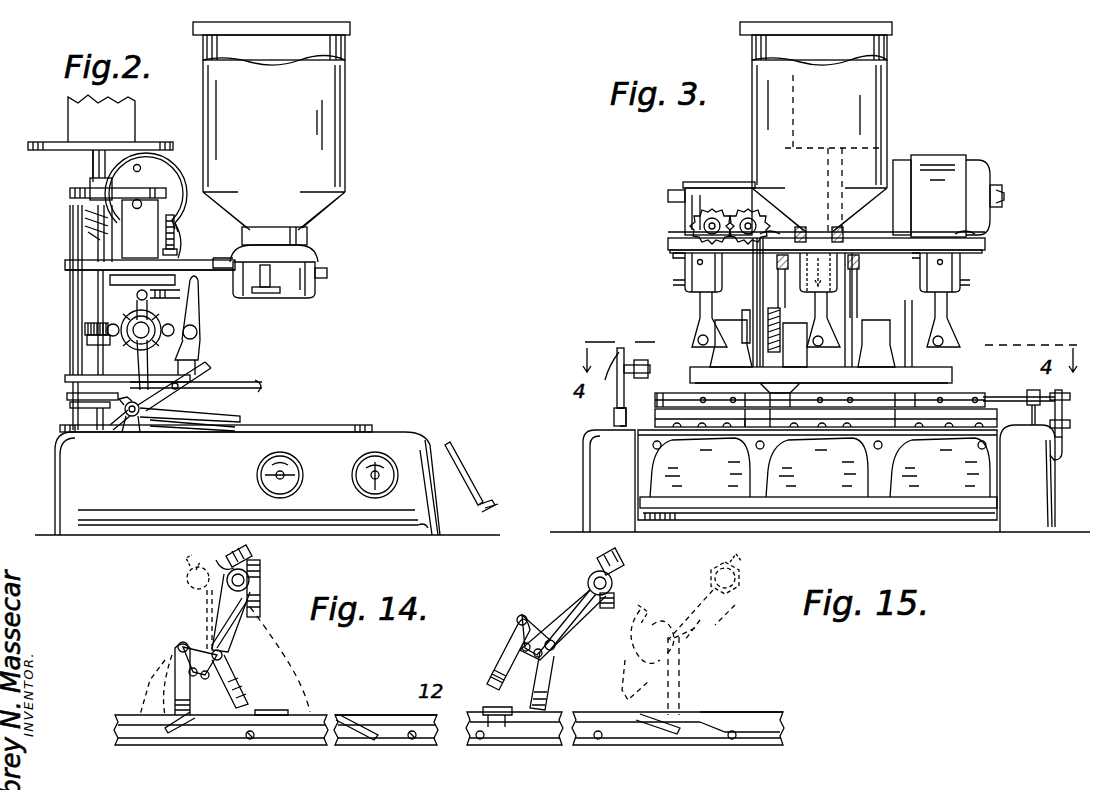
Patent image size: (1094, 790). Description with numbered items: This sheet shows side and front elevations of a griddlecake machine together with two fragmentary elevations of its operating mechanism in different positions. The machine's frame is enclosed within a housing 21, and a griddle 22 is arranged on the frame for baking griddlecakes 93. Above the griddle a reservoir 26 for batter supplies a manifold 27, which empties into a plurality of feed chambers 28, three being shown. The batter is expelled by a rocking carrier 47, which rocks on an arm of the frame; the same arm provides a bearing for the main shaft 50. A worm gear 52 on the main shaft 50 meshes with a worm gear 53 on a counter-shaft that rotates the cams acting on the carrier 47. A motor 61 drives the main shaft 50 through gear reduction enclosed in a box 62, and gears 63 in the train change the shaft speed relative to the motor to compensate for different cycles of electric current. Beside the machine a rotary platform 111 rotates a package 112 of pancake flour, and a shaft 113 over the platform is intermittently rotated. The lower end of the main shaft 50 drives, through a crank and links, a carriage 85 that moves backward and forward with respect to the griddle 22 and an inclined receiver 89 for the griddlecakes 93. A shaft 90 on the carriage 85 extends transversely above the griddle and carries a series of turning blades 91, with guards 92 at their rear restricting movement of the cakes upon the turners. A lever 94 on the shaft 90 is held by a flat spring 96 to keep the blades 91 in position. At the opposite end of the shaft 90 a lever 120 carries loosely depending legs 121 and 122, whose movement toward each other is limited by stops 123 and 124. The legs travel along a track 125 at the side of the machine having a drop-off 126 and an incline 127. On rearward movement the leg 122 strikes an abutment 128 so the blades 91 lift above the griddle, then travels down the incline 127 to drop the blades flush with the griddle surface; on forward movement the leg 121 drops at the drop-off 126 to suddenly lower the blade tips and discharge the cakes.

In FIG. 2, the housing 21 is at (64, 476).
In FIG. 3, the housing 21 is at (592, 475).
In FIG. 2, the griddle 22 is at (328, 426).
In FIG. 3, the griddle 22 is at (940, 418).
In FIG. 2, the reservoir 26 is at (330, 105).
In FIG. 3, the reservoir 26 is at (752, 124).
In FIG. 2, the manifold 27 is at (298, 242).
In FIG. 3, the manifold 27 is at (930, 238).
In FIG. 2, the feed chambers 28 is at (300, 290).
In FIG. 3, the feed chambers 28 is at (690, 294).
In FIG. 2, the rocking carrier 47 is at (136, 304).
In FIG. 2, the main shaft 50 is at (95, 292).
In FIG. 2, the worm gear 52 is at (85, 333).
In FIG. 2, the worm gear 53 is at (122, 344).
In FIG. 3, the worm gear 53 is at (780, 314).
In FIG. 2, the motor 61 is at (172, 158).
In FIG. 3, the motor 61 is at (932, 155).
In FIG. 2, the box 62 is at (145, 207).
In FIG. 3, the box 62 is at (696, 182).
In FIG. 2, the gears 63 is at (176, 248).
In FIG. 3, the gears 63 is at (742, 208).
In FIG. 14, the carriage 85 is at (261, 607).
In FIG. 15, the carriage 85 is at (615, 600).
In FIG. 2, the inclined receiver 89 is at (492, 507).
In FIG. 3, the inclined receiver 89 is at (760, 490).
In FIG. 2, the shaft 90 is at (133, 420).
In FIG. 3, the shaft 90 is at (644, 395).
In FIG. 14, the shaft 90 is at (206, 568).
In FIG. 15, the shaft 90 is at (740, 592).
In FIG. 2, the turning blades 91 is at (218, 420).
In FIG. 3, the turning blades 91 is at (735, 418).
In FIG. 2, the guards 92 is at (160, 427).
In FIG. 3, the guards 92 is at (680, 395).
In FIG. 2, the griddlecakes 93 is at (472, 482).
In FIG. 3, the griddlecakes 93 is at (832, 490).
In FIG. 2, the lever 94 is at (208, 370).
In FIG. 3, the lever 94 is at (614, 377).
In FIG. 2, the flat spring 96 is at (112, 430).
In FIG. 3, the flat spring 96 is at (617, 420).
In FIG. 2, the rotary platform 111 is at (48, 142).
In FIG. 2, the package 112 is at (120, 108).
In FIG. 2, the shaft 113 is at (92, 162).
In FIG. 14, the lever 120 is at (244, 600).
In FIG. 15, the lever 120 is at (572, 624).
In FIG. 14, the leg 121 is at (175, 696).
In FIG. 15, the leg 121 is at (505, 670).
In FIG. 15, the leg 122 is at (546, 686).
In FIG. 14, the stop 123 is at (198, 652).
In FIG. 15, the stop 123 is at (545, 622).
In FIG. 14, the stop 124 is at (207, 640).
In FIG. 15, the stop 124 is at (552, 618).
In FIG. 3, the track 125 is at (1055, 462).
In FIG. 14, the track 125 is at (340, 712).
In FIG. 15, the track 125 is at (778, 716).
In FIG. 14, the drop-off 126 is at (178, 720).
In FIG. 14, the incline 127 is at (355, 724).
In FIG. 15, the incline 127 is at (650, 727).
In FIG. 14, the abutment 128 is at (278, 708).
In FIG. 15, the abutment 128 is at (490, 707).